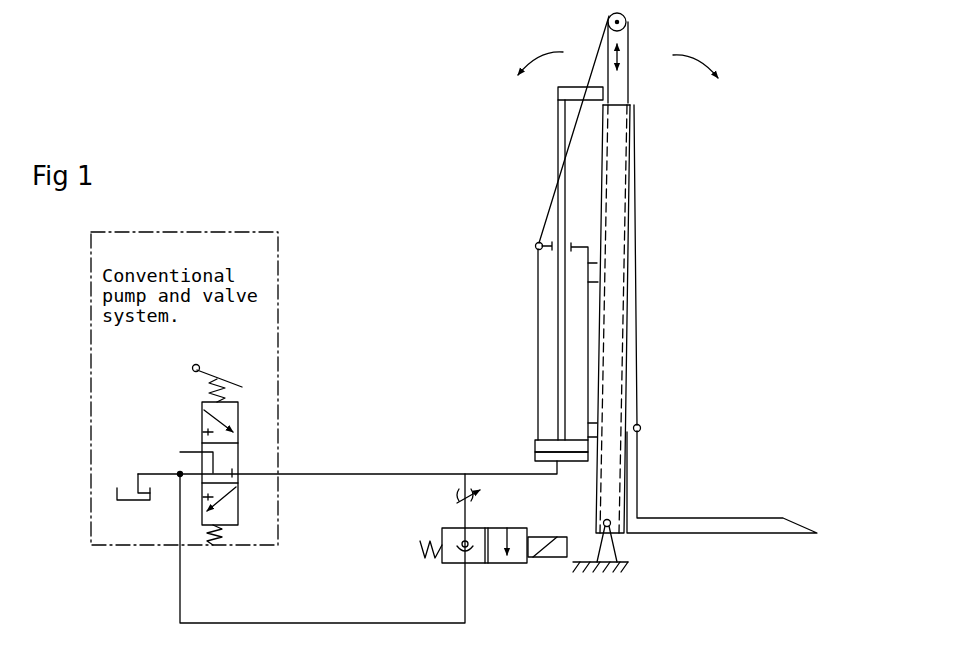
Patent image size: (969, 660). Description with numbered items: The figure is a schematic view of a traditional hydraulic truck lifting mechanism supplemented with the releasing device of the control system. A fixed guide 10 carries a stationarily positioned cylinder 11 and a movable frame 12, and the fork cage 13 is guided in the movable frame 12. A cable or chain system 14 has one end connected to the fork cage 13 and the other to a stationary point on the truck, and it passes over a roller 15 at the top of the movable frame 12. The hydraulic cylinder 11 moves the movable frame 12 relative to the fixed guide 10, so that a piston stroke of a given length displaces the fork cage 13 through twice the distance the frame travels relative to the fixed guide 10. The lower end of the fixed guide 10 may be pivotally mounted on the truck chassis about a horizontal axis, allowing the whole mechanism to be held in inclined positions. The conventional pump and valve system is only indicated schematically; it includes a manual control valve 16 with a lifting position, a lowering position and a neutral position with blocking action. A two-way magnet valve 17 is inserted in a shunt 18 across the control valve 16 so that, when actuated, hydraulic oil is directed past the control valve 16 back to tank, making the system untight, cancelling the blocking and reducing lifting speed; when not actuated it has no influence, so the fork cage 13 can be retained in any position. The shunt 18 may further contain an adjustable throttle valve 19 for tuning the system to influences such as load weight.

The fixed guide 10 is at (610, 375).
The cylinder 11 is at (542, 368).
The movable frame 12 is at (618, 80).
The fork cage 13 is at (632, 502).
The cable or chain system 14 is at (638, 177).
The roller 15 is at (628, 22).
The manual control valve 16 is at (225, 462).
The two-way magnet valve 17 is at (472, 558).
The shunt 18 is at (290, 621).
The adjustable throttle valve 19 is at (453, 500).